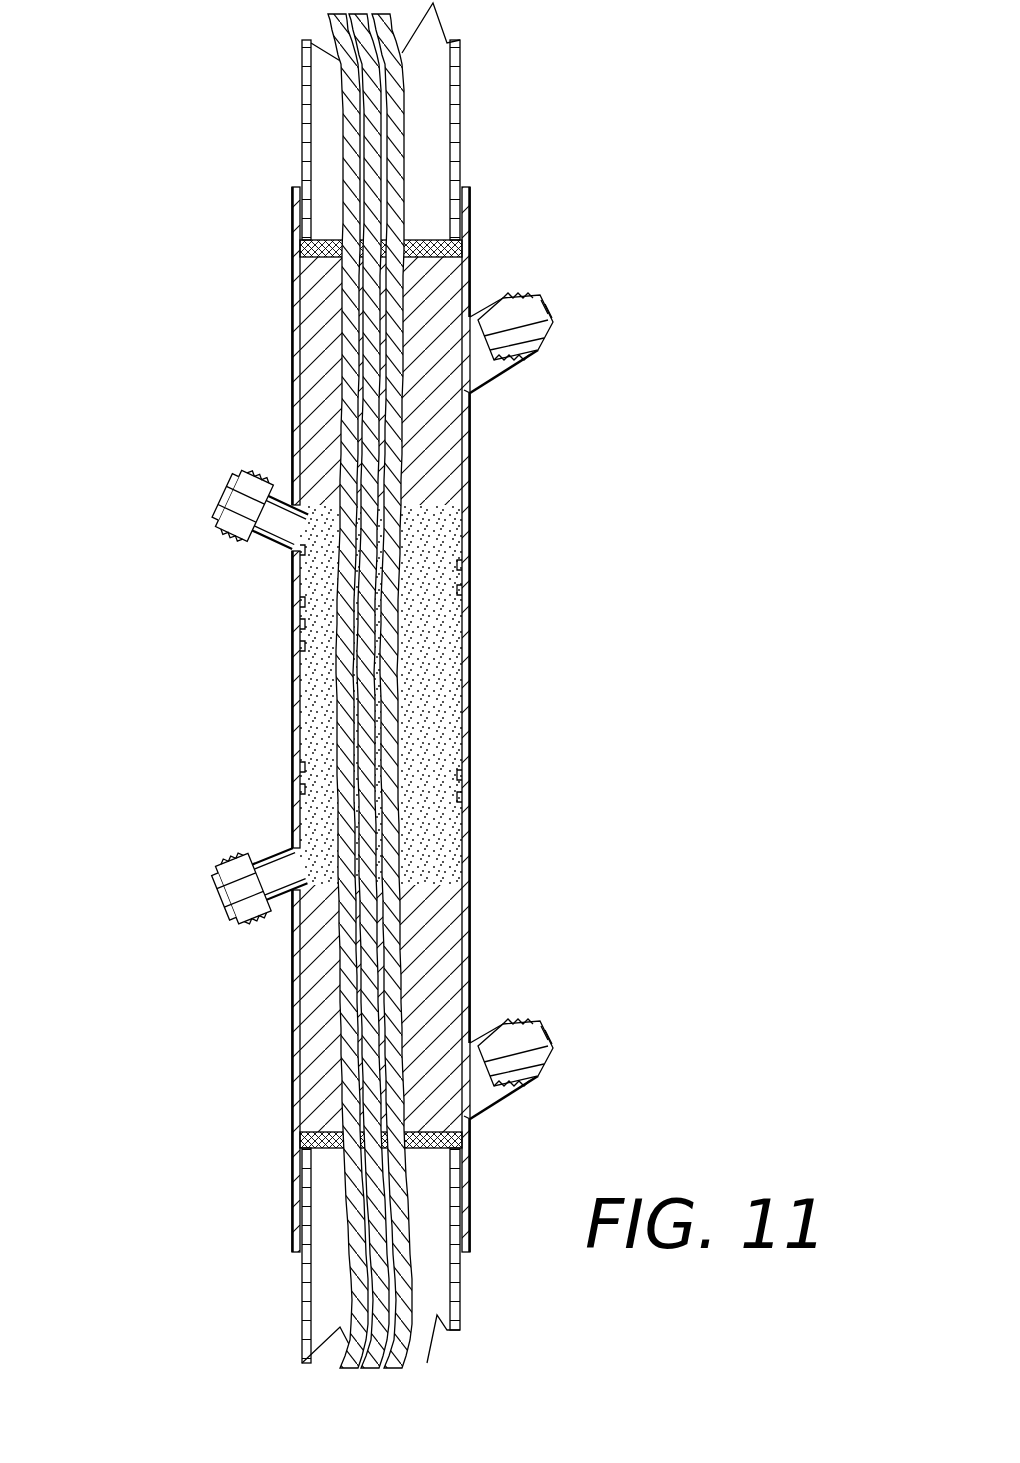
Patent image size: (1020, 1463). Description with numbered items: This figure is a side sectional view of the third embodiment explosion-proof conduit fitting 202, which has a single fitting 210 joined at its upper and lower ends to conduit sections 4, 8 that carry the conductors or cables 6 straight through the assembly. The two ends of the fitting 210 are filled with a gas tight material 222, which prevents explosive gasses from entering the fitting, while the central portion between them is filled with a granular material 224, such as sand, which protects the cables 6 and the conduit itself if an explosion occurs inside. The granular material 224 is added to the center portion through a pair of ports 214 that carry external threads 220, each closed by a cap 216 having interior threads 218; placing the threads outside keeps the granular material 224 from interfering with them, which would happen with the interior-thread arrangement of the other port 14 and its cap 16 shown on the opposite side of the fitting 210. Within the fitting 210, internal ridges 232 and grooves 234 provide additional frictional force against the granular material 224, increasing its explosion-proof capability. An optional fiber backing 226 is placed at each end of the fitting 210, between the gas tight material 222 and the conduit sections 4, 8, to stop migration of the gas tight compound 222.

The conduit section 4 is at (305, 160).
The conductors or cables 6 is at (398, 660).
The conduit section 8 is at (305, 1290).
The port 14 is at (493, 373).
The cap 16 is at (520, 335).
The explosion-proof conduit fitting 202 is at (423, 719).
The fitting 210 is at (295, 432).
The ports 214 is at (285, 553).
The cap 216 is at (223, 520).
The interior threads 218 is at (163, 907).
The external threads 220 is at (243, 907).
The gas tight material 222 is at (437, 430).
The granular material 224 is at (432, 778).
The fiber backing 226 is at (300, 247).
The internal ridges 232 is at (294, 623).
The grooves 234 is at (468, 580).